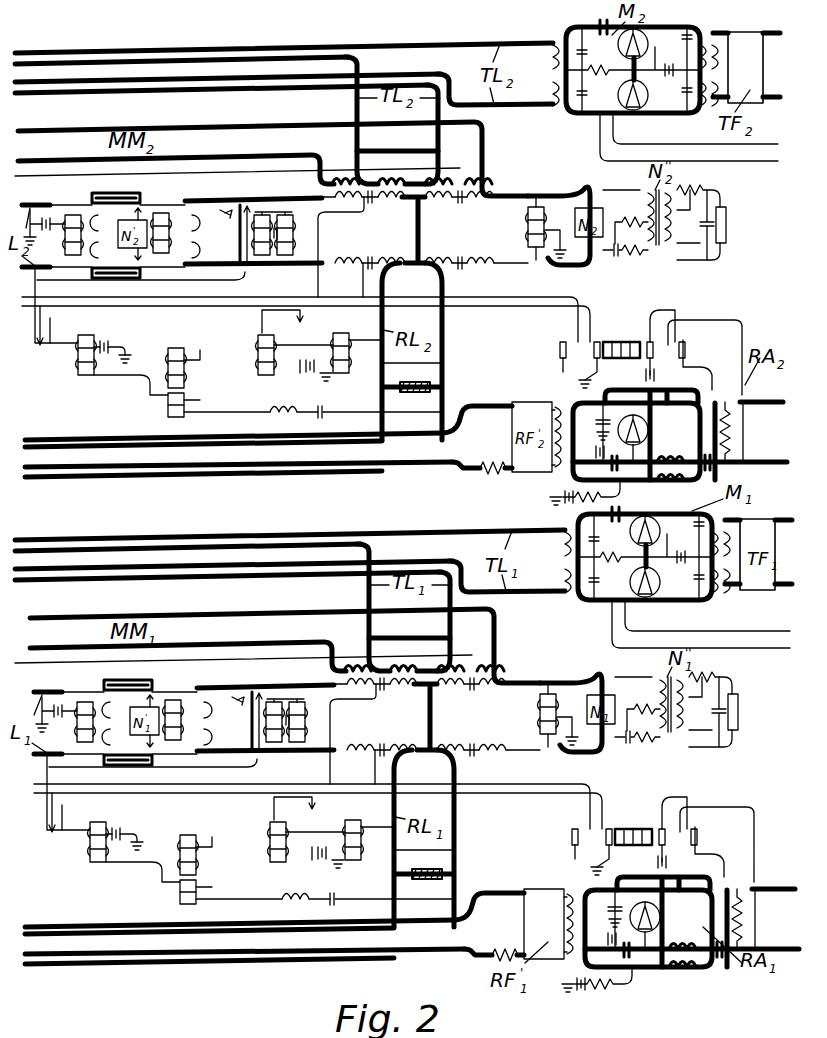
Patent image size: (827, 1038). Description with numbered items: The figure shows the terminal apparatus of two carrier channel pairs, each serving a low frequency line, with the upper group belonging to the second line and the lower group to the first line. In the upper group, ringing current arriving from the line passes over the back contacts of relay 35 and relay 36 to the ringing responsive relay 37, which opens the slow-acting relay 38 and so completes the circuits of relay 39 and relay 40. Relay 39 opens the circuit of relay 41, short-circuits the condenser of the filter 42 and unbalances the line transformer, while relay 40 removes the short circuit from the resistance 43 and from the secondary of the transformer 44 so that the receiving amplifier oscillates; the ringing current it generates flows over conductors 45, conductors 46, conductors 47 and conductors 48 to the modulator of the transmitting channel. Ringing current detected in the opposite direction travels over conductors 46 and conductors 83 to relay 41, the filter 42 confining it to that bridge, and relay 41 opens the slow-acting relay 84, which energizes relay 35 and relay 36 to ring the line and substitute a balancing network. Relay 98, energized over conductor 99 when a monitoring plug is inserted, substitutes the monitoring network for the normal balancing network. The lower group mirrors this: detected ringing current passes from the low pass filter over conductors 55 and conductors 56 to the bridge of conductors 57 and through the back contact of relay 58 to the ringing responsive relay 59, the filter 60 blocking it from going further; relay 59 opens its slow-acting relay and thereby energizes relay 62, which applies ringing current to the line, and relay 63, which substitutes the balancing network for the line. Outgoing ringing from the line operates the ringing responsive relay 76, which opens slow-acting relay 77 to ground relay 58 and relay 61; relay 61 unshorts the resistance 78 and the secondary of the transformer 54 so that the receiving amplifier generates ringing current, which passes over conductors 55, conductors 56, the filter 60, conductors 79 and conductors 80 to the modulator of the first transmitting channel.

The conductors 48 is at (148, 81).
The conductors 47 is at (233, 92).
The conductor 99 is at (248, 172).
The relay 35 is at (65, 236).
The relay 36 is at (163, 233).
The ringing responsive relay 37 is at (268, 213).
The conductors 46 is at (207, 477).
The conductors 45 is at (287, 471).
The filter 42 is at (400, 184).
The relay 98 is at (528, 230).
The slow-acting relay 84 is at (78, 355).
The ringing responsive relay 41 is at (183, 362).
The slow-acting relay 38 is at (276, 345).
The relay 39 is at (350, 345).
The relay 40 is at (620, 342).
The conductors 83 is at (364, 404).
The resistance 43 is at (491, 465).
The transformer 44 is at (672, 481).
The conductors 80 is at (222, 569).
The conductors 79 is at (300, 580).
The relay 62 is at (81, 700).
The relay 63 is at (190, 699).
The ringing responsive relay 76 is at (281, 699).
The filter 60 is at (240, 865).
The ringing responsive relay 59 is at (199, 856).
The slow-acting relay 77 is at (297, 842).
The relay 58 is at (366, 840).
The relay 61 is at (634, 816).
The conductors 57 is at (334, 897).
The resistance 78 is at (505, 935).
The transformer 54 is at (672, 971).
The conductors 55 is at (83, 926).
The conductors 56 is at (151, 933).